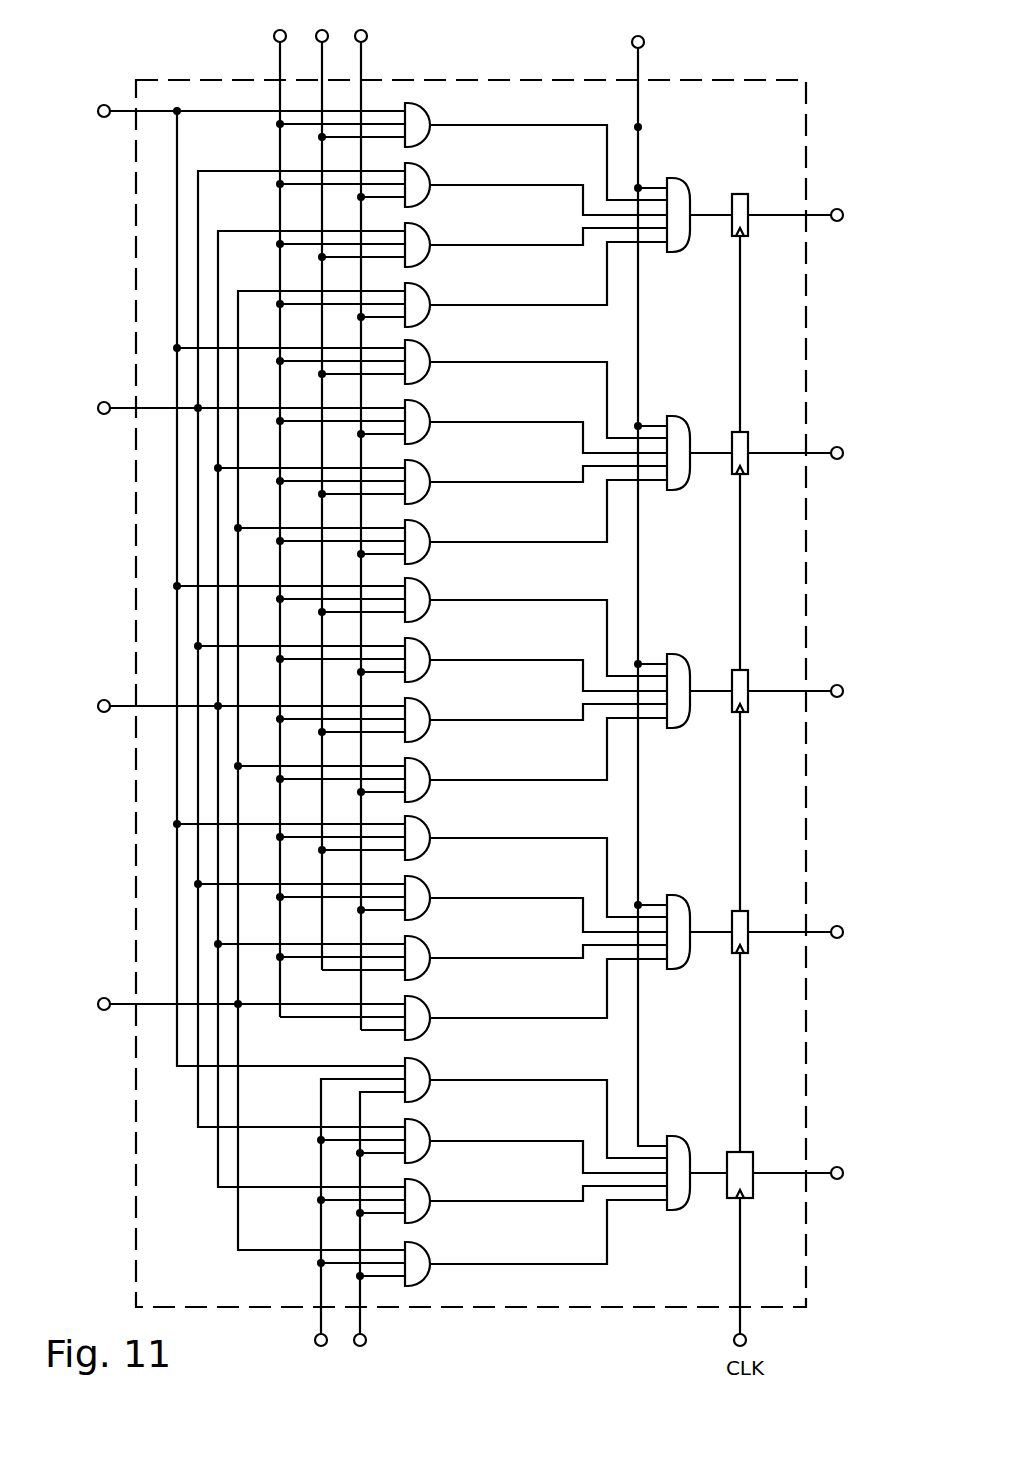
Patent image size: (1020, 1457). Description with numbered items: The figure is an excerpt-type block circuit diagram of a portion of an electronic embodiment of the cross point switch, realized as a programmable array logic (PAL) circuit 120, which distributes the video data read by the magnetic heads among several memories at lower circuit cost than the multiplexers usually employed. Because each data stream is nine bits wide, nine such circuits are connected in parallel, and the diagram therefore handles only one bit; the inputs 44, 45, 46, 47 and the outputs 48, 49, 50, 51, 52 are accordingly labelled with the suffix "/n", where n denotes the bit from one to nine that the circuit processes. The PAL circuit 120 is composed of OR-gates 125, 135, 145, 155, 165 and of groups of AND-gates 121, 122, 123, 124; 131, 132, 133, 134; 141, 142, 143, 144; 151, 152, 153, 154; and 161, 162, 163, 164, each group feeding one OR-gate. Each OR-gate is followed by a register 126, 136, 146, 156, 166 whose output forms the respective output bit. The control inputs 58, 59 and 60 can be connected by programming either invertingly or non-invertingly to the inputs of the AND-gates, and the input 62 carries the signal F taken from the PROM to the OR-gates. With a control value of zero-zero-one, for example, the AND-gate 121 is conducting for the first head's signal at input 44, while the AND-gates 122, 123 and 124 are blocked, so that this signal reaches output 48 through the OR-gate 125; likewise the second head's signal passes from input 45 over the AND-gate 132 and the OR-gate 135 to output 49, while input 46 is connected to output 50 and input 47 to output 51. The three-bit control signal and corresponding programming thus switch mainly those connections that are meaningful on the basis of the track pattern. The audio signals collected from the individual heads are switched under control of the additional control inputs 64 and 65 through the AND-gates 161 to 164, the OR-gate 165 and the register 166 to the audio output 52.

The PAL circuit 120 is at (831, 162).
The input 44 is at (224, 582).
The input 45 is at (224, 649).
The input 46 is at (224, 709).
The input 47 is at (224, 770).
The output 48 is at (853, 229).
The output 49 is at (853, 467).
The output 50 is at (853, 705).
The output 51 is at (853, 946).
The output 52 is at (853, 1187).
The control input 58 is at (336, 512).
The control input 59 is at (357, 488).
The control input 60 is at (376, 518).
The input 62 is at (646, 578).
The control input 64 is at (356, 1228).
The control input 65 is at (376, 1234).
The AND-gate 121 is at (536, 150).
The AND-gate 122 is at (536, 188).
The AND-gate 123 is at (536, 244).
The AND-gate 124 is at (536, 284).
The OR-gate 125 is at (694, 201).
The register 126 is at (780, 202).
The AND-gate 131 is at (536, 388).
The AND-gate 132 is at (536, 425).
The AND-gate 133 is at (536, 481).
The AND-gate 134 is at (536, 522).
The OR-gate 135 is at (694, 439).
The register 136 is at (781, 448).
The AND-gate 141 is at (536, 626).
The AND-gate 142 is at (536, 663).
The AND-gate 143 is at (536, 719).
The AND-gate 144 is at (536, 760).
The OR-gate 145 is at (694, 677).
The register 146 is at (781, 686).
The AND-gate 151 is at (536, 865).
The AND-gate 152 is at (536, 903).
The AND-gate 153 is at (536, 957).
The AND-gate 154 is at (536, 999).
The OR-gate 155 is at (694, 918).
The register 156 is at (781, 927).
The AND-gate 161 is at (536, 1107).
The AND-gate 162 is at (536, 1145).
The AND-gate 163 is at (536, 1200).
The AND-gate 164 is at (536, 1243).
The OR-gate 165 is at (691, 1159).
The register 166 is at (779, 1169).